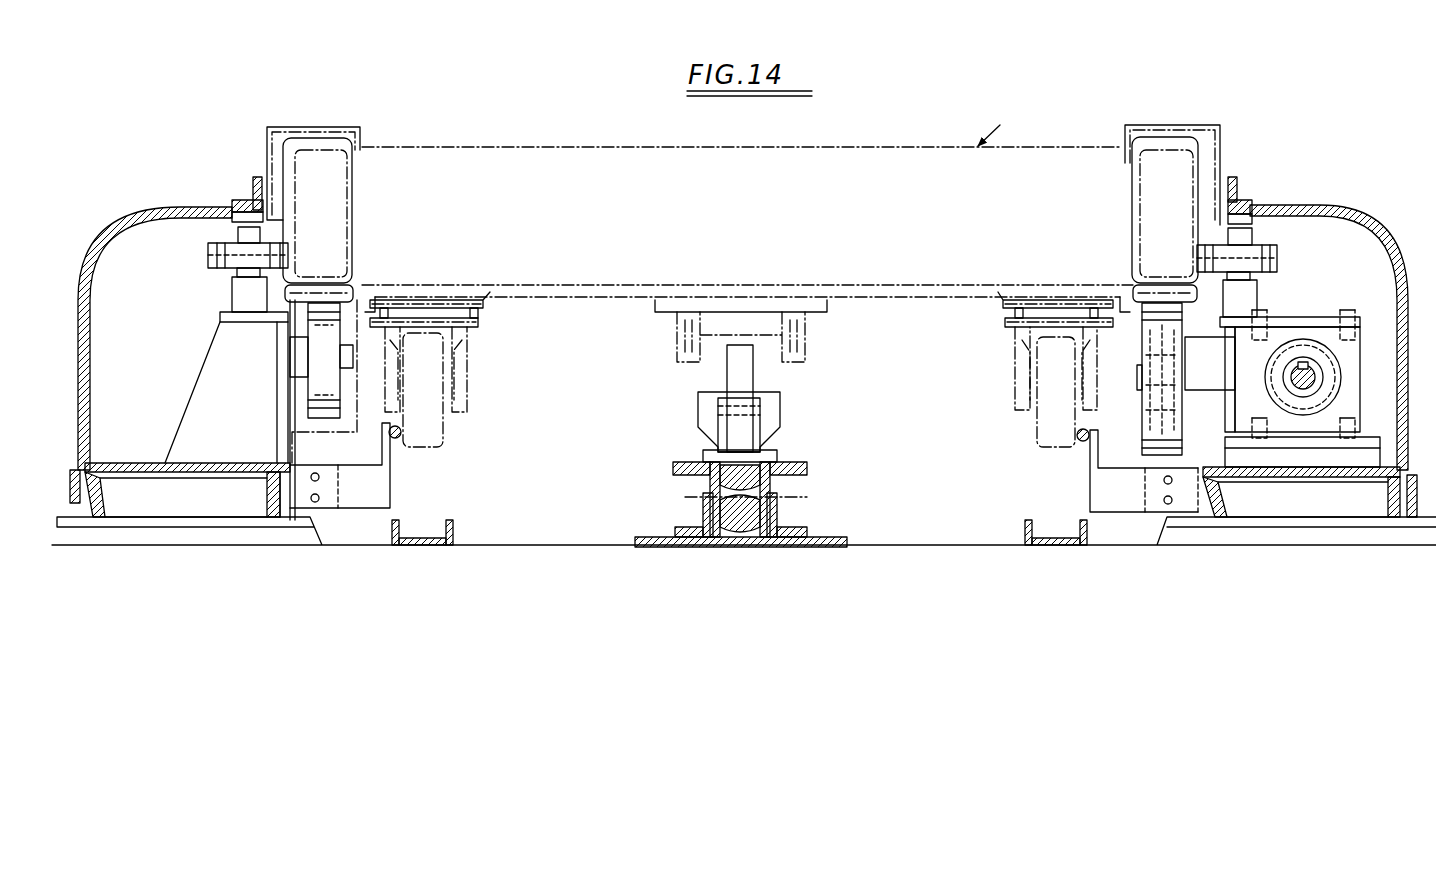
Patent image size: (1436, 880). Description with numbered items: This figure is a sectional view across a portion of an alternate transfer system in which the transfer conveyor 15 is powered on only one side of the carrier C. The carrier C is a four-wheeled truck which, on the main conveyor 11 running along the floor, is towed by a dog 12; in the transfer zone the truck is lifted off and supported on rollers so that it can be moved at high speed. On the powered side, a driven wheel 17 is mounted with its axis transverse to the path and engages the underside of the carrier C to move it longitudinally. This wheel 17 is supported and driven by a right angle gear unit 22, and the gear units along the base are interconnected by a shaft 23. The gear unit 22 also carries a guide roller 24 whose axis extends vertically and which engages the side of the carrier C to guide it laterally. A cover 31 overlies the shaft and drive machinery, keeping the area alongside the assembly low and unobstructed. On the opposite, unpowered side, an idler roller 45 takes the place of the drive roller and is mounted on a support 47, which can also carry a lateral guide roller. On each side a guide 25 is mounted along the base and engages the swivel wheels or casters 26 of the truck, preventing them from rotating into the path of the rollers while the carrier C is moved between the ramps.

The main conveyor 11 is at (767, 480).
The dog 12 is at (747, 378).
The transfer conveyor 15 is at (317, 234).
The wheel 17 is at (1152, 442).
The right angle gear unit 22 is at (1312, 330).
The shaft 23 is at (1301, 390).
The guide roller 24 is at (215, 257).
The guide 25 is at (385, 482).
The swivel wheel or caster 26 is at (437, 444).
The cover 31 is at (1348, 213).
The idler roller 45 is at (325, 350).
The support 47 is at (180, 448).
The carrier C is at (999, 128).